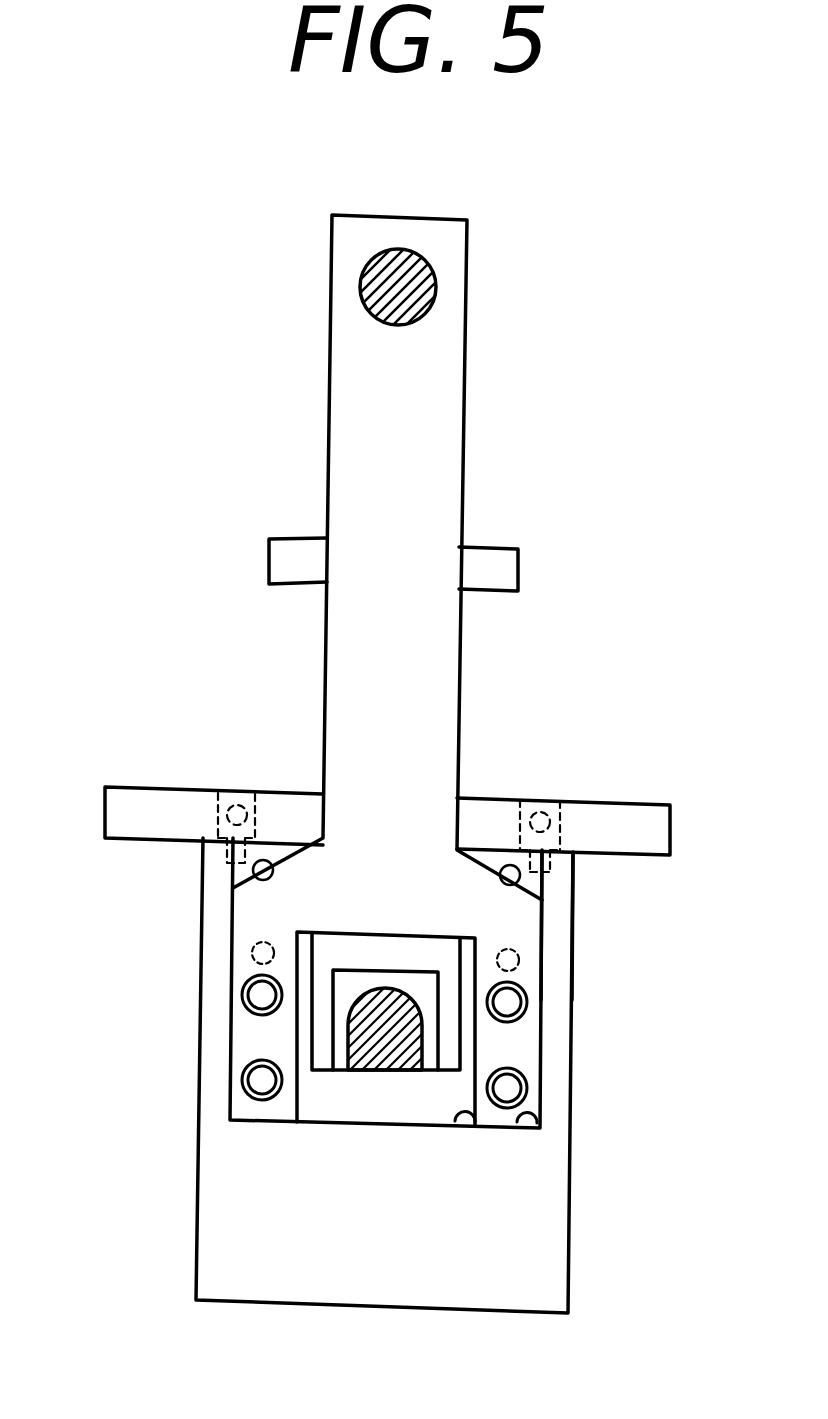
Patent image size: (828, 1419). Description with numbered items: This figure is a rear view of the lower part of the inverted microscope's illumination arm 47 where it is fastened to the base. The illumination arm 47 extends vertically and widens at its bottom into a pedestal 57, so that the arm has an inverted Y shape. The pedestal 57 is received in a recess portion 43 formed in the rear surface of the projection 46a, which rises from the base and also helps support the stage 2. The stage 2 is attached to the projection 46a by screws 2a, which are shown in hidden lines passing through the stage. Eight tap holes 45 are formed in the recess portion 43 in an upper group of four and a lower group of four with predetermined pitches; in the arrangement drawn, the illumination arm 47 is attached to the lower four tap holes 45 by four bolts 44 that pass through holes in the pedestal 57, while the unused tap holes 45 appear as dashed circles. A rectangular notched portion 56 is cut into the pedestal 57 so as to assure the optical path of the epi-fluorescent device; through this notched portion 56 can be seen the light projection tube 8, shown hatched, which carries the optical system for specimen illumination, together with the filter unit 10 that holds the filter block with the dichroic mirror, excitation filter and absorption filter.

The illumination arm 47 is at (440, 433).
The stage 2 is at (627, 808).
The screws 2a is at (237, 812).
The pedestal 57 is at (243, 923).
The projection 46a is at (562, 902).
The bolts 44 is at (250, 987).
The tap holes 45 is at (520, 955).
The filter unit 10 is at (338, 1060).
The light projection tube 8 is at (398, 1068).
The rectangular notched portion 56 is at (453, 1118).
The recess portion 43 is at (535, 1120).